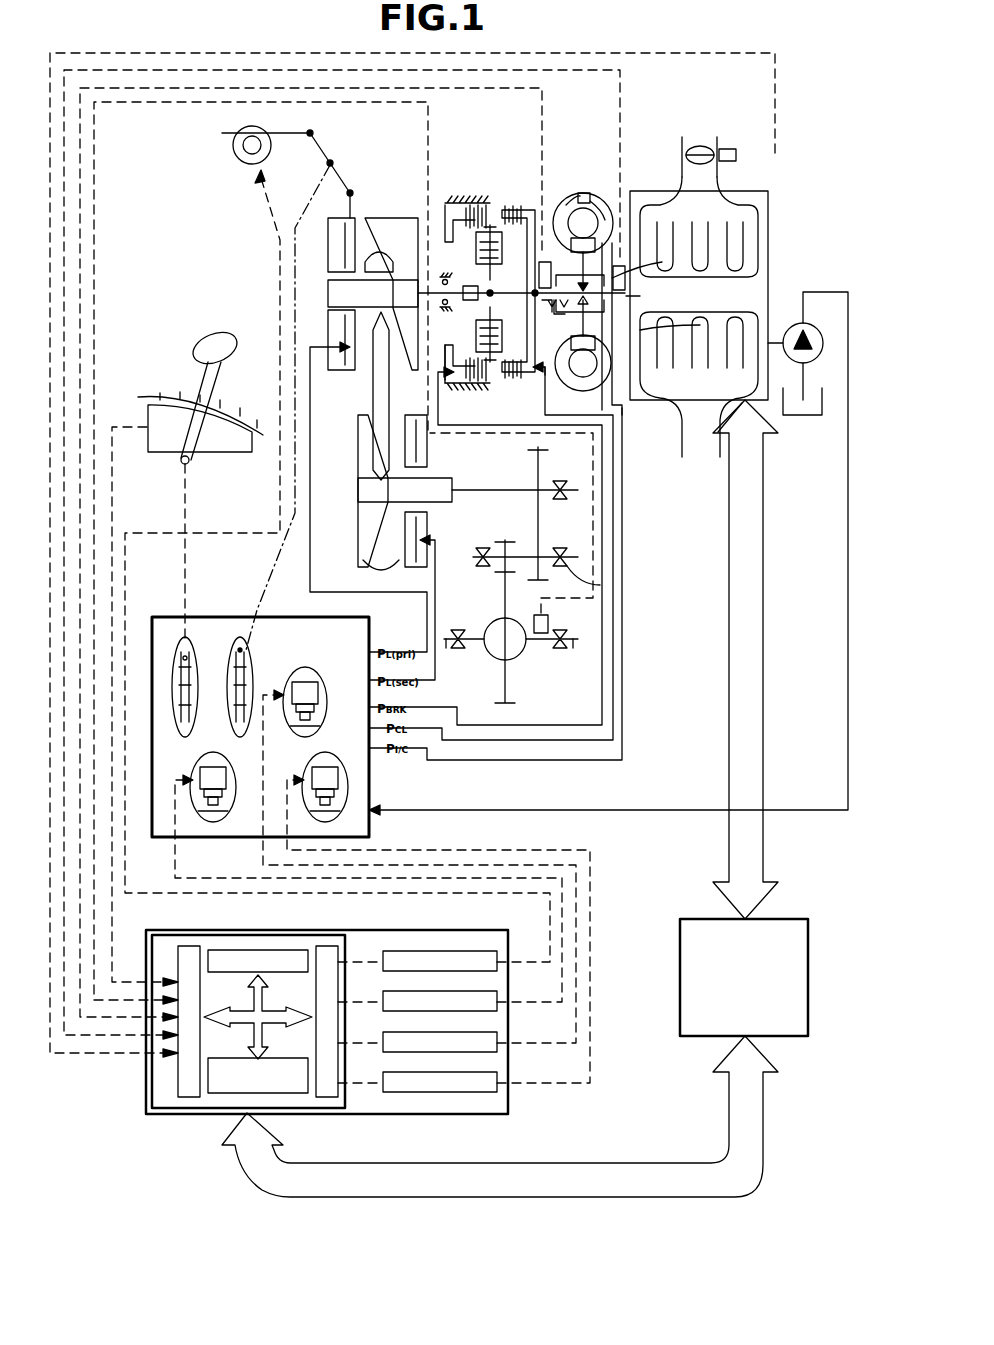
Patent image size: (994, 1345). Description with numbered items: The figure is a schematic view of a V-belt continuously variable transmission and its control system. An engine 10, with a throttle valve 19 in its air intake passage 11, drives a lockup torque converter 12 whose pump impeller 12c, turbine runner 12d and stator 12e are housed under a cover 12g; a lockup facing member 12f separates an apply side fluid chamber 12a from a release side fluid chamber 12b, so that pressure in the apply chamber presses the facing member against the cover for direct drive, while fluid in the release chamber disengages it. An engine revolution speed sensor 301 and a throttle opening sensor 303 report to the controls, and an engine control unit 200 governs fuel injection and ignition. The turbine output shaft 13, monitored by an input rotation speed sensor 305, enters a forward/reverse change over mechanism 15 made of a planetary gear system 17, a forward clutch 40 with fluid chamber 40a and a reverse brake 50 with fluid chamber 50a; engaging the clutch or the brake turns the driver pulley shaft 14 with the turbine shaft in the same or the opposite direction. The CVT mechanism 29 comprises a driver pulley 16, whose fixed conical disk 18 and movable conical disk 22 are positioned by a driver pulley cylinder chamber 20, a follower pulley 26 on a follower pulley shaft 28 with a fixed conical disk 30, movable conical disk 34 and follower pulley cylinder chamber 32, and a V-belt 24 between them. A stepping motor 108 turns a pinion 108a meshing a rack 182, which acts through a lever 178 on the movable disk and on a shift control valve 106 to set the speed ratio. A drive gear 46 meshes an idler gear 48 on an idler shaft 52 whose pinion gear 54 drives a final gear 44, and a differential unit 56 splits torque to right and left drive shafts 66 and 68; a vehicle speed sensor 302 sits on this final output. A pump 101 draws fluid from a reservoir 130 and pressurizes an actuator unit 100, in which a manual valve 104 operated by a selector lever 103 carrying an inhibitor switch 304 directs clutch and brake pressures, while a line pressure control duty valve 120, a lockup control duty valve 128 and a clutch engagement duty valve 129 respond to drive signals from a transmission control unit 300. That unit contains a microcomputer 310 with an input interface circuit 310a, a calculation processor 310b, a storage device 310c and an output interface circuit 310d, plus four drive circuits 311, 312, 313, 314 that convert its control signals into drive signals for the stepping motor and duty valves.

The engine 10 is at (770, 203).
The air intake passage 11 is at (752, 240).
The torque converter 12 is at (590, 183).
The apply side fluid chamber 12a is at (607, 256).
The release side fluid chamber 12b is at (670, 325).
The pump impeller 12c is at (573, 202).
The turbine runner 12d is at (595, 205).
The stator 12e is at (553, 297).
The lockup facing member 12f is at (640, 262).
The cover 12g is at (592, 196).
The output shaft 13 is at (548, 306).
The driver pulley shaft 14 is at (420, 292).
The forward/reverse change over mechanism 15 is at (471, 190).
The driver pulley 16 is at (393, 238).
The planetary gear system 17 is at (505, 243).
The fixed conical disk 18 is at (414, 215).
The throttle valve 19 is at (700, 146).
The driver pulley cylinder chamber 20 is at (342, 371).
The movable conical disk 22 is at (355, 215).
The V-belt 24 is at (380, 252).
The follower pulley 26 is at (364, 568).
The follower pulley shaft 28 is at (502, 488).
The V-belt CVT mechanism 29 is at (358, 430).
The fixed conical disk 30 is at (358, 496).
The follower pulley cylinder chamber 32 is at (428, 528).
The movable conical disk 34 is at (430, 468).
The forward clutch 40 is at (517, 205).
The fluid chamber 40a is at (520, 386).
The final gear 44 is at (506, 683).
The drive gear 46 is at (542, 470).
The idler gear 48 is at (544, 545).
The reverse brake 50 is at (488, 213).
The fluid chamber 50a is at (458, 386).
The idler shaft 52 is at (600, 585).
The pinion gear 54 is at (512, 545).
The differential unit 56 is at (491, 624).
The drive shaft 66 is at (453, 654).
The drive shaft 68 is at (571, 654).
The actuator unit 100 is at (371, 790).
The pump 101 is at (813, 323).
The selector lever 103 is at (227, 337).
The manual valve 104 is at (200, 668).
The shift control valve 106 is at (254, 663).
The stepping motor 108 is at (247, 160).
The pinion 108a is at (243, 147).
The line pressure control duty valve 120 is at (226, 776).
The lockup control duty valve 128 is at (307, 675).
The clutch engagement duty valve 129 is at (334, 779).
The reservoir 130 is at (812, 416).
The lever 178 is at (350, 137).
The rack 182 is at (292, 133).
The engine control unit 200 is at (809, 1005).
The transmission control unit 300 is at (510, 1108).
The engine revolution speed sensor 301 is at (626, 284).
The vehicle speed sensor 302 is at (549, 620).
The throttle opening sensor 303 is at (733, 149).
The inhibitor switch 304 is at (221, 448).
The input rotation speed sensor 305 is at (539, 277).
The microcomputer 310 is at (192, 935).
The input interface circuit 310a is at (190, 1100).
The calculation processor 310b is at (287, 948).
The storage device 310c is at (300, 1094).
The output interface circuit 310d is at (336, 1098).
The drive circuit 311 is at (455, 951).
The drive circuit 312 is at (455, 991).
The drive circuit 313 is at (455, 1032).
The drive circuit 314 is at (455, 1072).